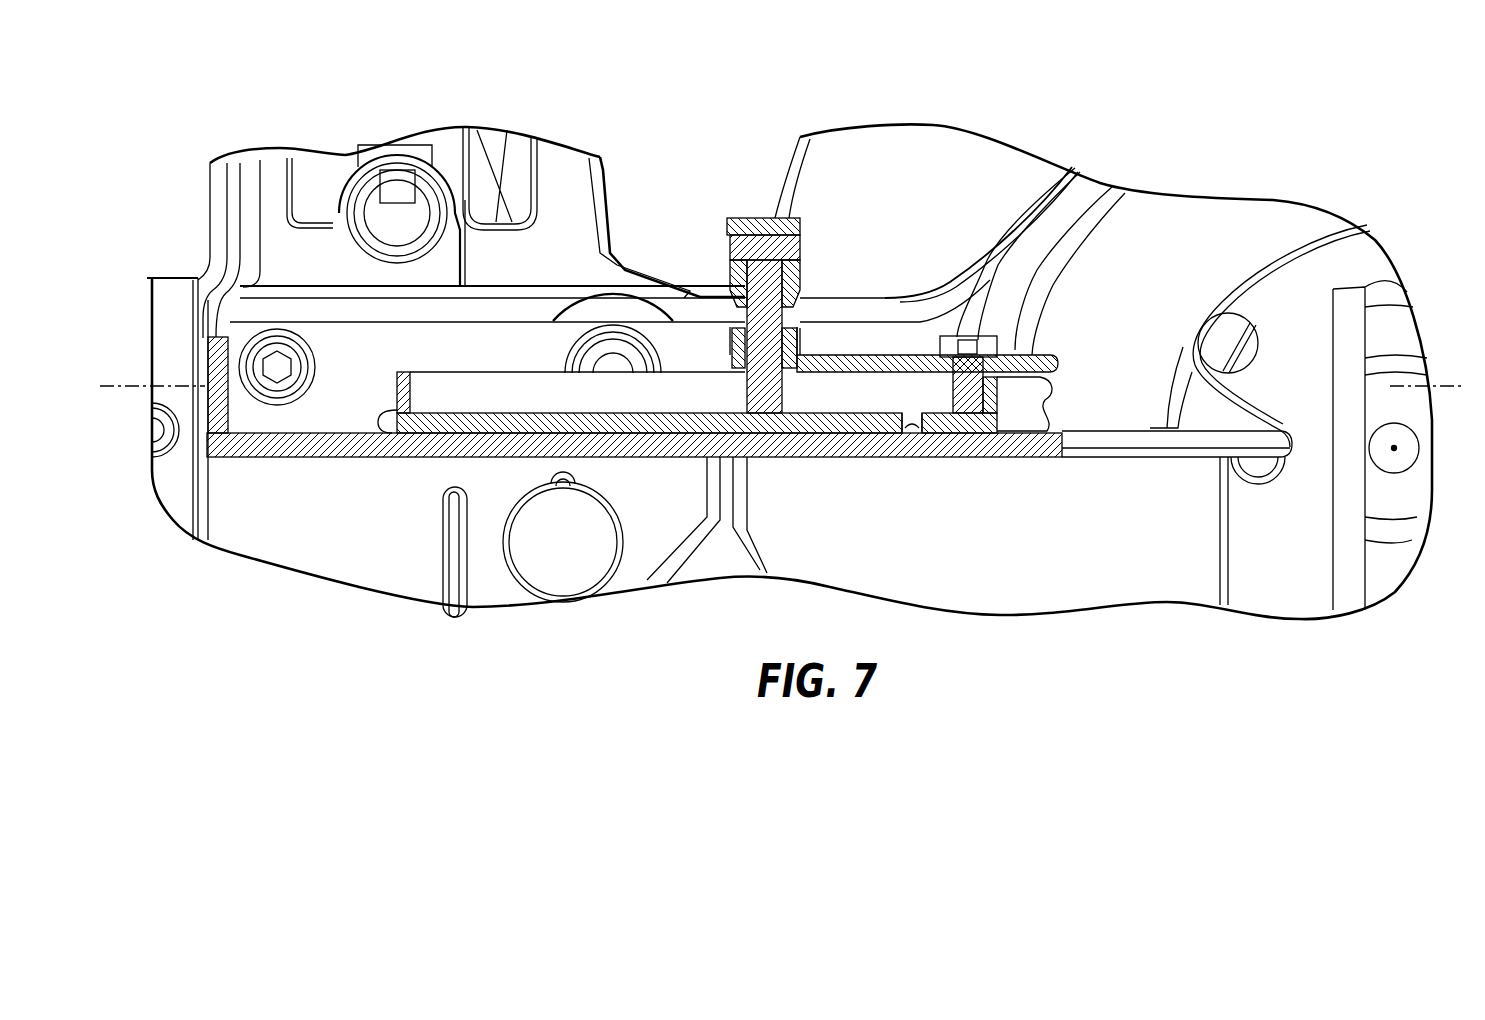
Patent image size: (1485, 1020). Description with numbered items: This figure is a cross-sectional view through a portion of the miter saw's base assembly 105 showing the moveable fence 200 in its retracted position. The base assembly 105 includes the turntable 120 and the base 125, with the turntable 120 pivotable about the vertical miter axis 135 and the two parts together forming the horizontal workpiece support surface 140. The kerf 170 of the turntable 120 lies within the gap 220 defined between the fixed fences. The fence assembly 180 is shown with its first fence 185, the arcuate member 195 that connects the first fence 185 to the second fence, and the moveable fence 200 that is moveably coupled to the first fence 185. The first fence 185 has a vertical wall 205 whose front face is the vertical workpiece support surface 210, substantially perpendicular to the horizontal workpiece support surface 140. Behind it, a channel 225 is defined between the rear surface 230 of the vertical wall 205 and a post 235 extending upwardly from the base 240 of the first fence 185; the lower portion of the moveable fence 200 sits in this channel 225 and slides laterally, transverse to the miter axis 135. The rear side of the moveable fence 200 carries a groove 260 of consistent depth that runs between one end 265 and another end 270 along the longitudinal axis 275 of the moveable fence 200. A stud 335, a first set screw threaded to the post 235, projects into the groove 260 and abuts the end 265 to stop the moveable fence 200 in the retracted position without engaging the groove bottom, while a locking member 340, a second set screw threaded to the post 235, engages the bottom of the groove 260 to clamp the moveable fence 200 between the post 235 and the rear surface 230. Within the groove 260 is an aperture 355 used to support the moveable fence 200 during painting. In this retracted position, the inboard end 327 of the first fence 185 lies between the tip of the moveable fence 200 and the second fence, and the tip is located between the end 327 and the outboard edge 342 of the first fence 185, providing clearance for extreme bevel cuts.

The base assembly 105 is at (679, 112).
The turntable 120 is at (1173, 563).
The base 125 is at (253, 173).
The miter axis 135 is at (1394, 448).
The horizontal workpiece support surface 140 is at (1037, 573).
The kerf 170 is at (1393, 562).
The fence assembly 180 is at (178, 168).
The first fence 185 is at (212, 360).
The arcuate member 195 is at (1078, 205).
The moveable fence 200 is at (553, 340).
The vertical wall 205 is at (367, 443).
The vertical workpiece support surface 210 is at (657, 460).
The gap 220 is at (1285, 292).
The channel 225 is at (1076, 376).
The rear surface 230 is at (322, 405).
The post 235 is at (858, 355).
The base 240 is at (514, 313).
The groove 260 is at (496, 410).
The end 265 is at (933, 357).
The end 270 is at (431, 411).
The longitudinal axis 275 is at (128, 382).
The end 327 is at (1295, 440).
The stud 335 is at (973, 335).
The locking member 340 is at (751, 232).
The outboard edge 342 is at (207, 440).
The aperture 355 is at (915, 436).